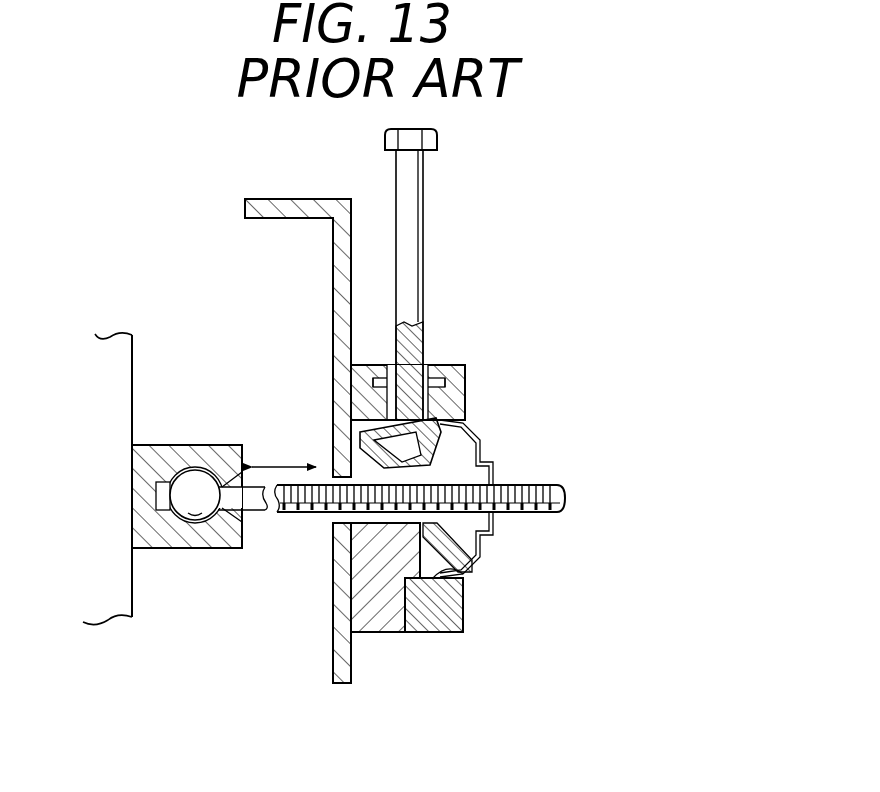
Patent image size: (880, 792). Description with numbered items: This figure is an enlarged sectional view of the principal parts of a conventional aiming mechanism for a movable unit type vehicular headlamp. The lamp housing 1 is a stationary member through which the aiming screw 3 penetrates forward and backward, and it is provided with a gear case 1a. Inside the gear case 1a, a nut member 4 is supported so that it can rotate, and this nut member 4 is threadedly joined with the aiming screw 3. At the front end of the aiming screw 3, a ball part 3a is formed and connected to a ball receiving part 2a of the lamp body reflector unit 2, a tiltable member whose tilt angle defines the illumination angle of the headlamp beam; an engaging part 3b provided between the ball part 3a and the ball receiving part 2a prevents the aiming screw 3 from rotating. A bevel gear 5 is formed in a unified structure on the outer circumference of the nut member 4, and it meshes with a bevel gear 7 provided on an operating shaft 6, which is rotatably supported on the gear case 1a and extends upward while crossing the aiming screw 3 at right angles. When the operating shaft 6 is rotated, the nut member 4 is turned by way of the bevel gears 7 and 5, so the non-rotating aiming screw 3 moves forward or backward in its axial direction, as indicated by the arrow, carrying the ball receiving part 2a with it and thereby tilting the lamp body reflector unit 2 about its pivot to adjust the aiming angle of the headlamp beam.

The lamp housing 1 is at (351, 280).
The gear case 1a is at (463, 382).
The lamp body reflector unit 2 is at (132, 358).
The ball receiving part 2a is at (185, 452).
The aiming screw 3 is at (300, 513).
The ball part 3a is at (194, 512).
The engaging part 3b is at (155, 498).
The nut member 4 is at (402, 517).
The bevel gear 5 is at (465, 590).
The operating shaft 6 is at (415, 202).
The bevel gear 7 is at (353, 440).